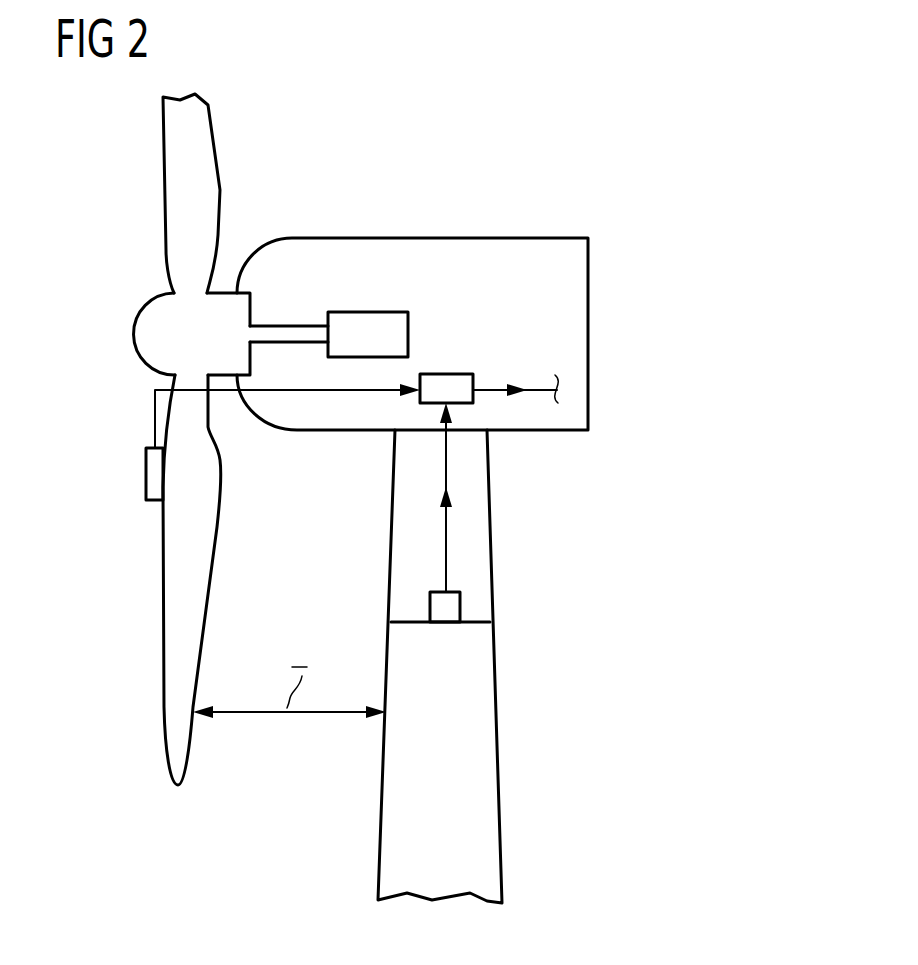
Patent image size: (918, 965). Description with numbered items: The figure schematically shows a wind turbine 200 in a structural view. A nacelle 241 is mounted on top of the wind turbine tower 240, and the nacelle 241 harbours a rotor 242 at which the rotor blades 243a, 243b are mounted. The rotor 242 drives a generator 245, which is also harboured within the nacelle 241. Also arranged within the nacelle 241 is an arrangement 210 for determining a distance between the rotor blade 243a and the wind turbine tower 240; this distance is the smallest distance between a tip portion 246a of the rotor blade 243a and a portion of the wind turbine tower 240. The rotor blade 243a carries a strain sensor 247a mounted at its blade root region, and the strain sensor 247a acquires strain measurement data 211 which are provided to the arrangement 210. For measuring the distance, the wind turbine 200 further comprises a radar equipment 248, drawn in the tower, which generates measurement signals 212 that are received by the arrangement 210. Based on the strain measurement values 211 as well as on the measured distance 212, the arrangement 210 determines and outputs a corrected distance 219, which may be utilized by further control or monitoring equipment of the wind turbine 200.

The wind turbine 200 is at (600, 161).
The arrangement for determining a distance 210 is at (447, 373).
The strain measurement data 211 is at (418, 392).
The measurement signals 212 is at (457, 407).
The corrected distance 219 is at (528, 385).
The wind turbine tower 240 is at (500, 767).
The nacelle 241 is at (475, 237).
The rotor 242 is at (288, 325).
The rotor blade 243a is at (164, 583).
The rotor blade 243b is at (163, 168).
The generator 245 is at (368, 311).
The tip portion 246a is at (128, 688).
The strain sensor 247a is at (155, 473).
The radar equipment 248 is at (445, 623).